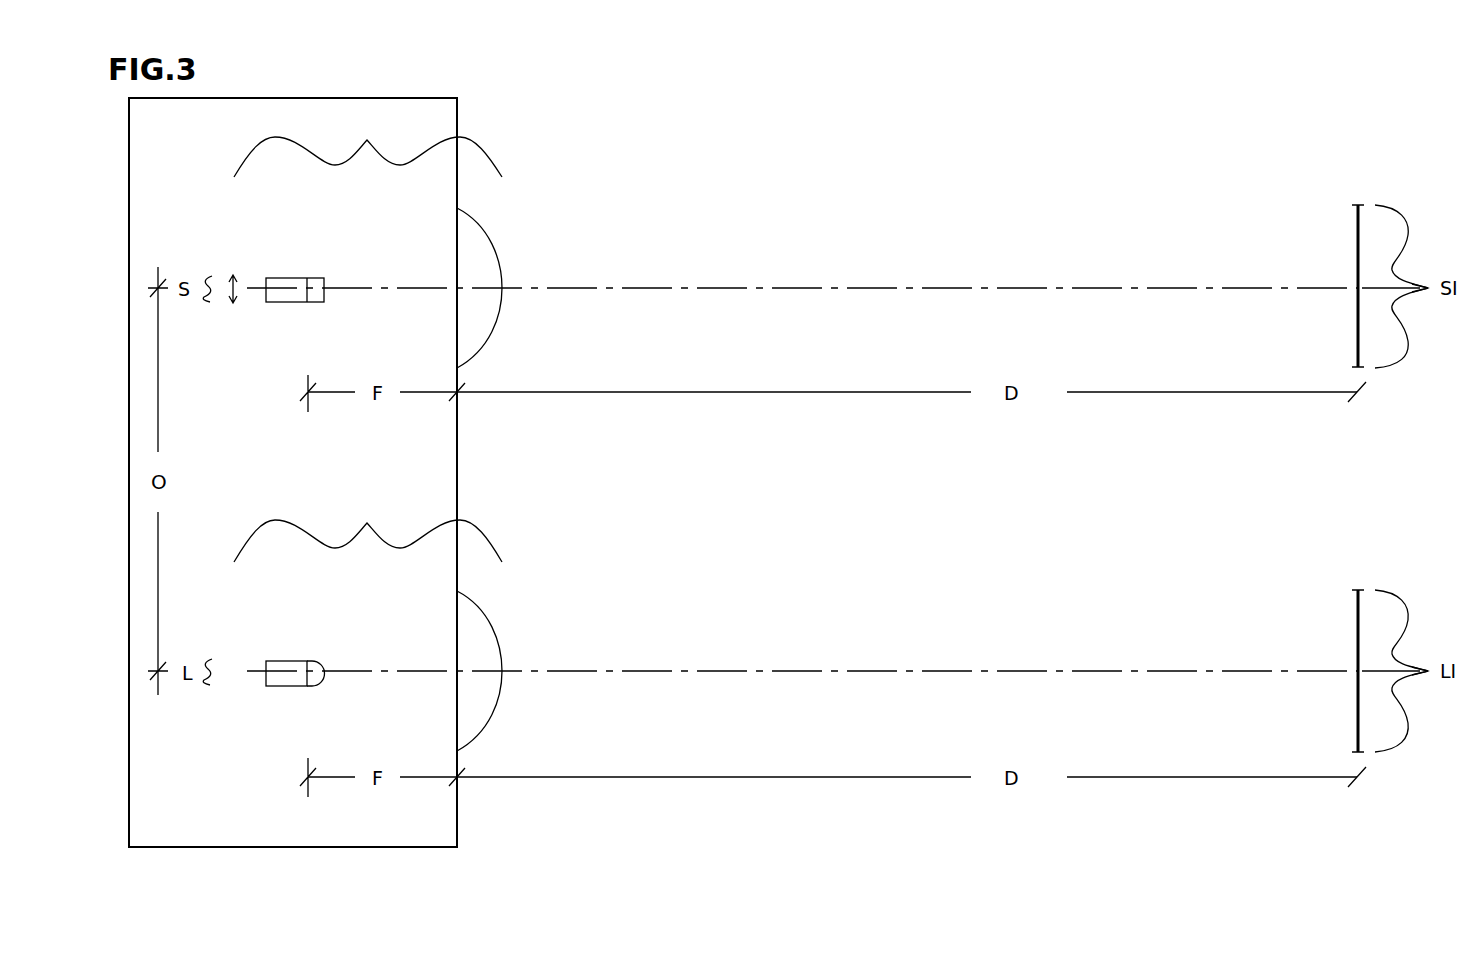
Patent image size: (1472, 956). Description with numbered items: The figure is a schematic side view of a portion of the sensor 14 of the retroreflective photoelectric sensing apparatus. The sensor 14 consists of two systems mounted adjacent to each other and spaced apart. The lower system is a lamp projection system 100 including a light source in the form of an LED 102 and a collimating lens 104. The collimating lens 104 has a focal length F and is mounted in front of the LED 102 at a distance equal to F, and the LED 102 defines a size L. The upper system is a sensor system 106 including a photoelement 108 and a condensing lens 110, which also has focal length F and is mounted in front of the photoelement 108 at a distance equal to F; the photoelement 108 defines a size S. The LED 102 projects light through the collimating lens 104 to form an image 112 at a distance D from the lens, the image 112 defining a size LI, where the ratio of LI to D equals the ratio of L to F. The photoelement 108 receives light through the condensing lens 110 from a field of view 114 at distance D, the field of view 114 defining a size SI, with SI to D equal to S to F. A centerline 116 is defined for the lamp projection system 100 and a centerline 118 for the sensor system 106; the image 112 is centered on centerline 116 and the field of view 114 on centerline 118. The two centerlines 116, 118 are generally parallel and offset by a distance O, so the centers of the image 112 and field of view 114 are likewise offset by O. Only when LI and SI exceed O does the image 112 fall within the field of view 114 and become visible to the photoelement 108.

The sensor 14 is at (322, 98).
The sensor system 106 is at (368, 145).
The photoelement 108 is at (314, 277).
The condensing lens 110 is at (457, 208).
The centerline 118 is at (628, 288).
The field of view 114 is at (1357, 251).
The lamp projection system 100 is at (368, 529).
The LED 102 is at (314, 660).
The collimating lens 104 is at (457, 591).
The centerline 116 is at (638, 671).
The image 112 is at (1357, 637).